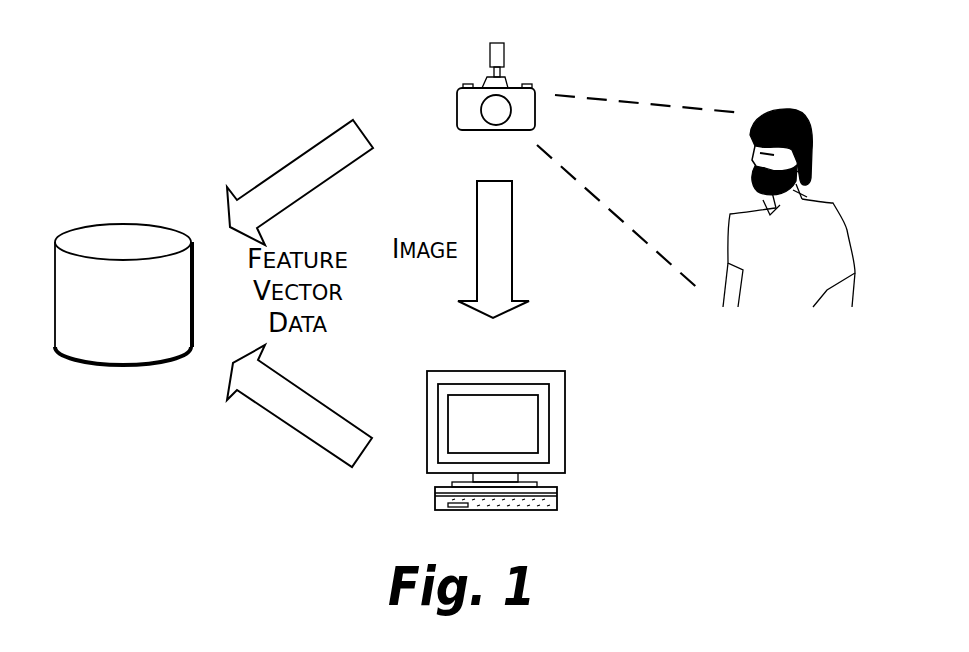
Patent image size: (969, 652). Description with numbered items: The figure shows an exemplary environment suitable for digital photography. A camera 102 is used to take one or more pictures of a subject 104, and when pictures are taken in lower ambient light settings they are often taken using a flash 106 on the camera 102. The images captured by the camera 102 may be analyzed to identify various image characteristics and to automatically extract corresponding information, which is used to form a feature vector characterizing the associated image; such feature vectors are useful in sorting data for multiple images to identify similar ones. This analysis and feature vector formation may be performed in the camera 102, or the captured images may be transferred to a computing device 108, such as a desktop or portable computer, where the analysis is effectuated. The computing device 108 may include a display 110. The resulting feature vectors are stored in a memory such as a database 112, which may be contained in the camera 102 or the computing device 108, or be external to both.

The camera 102 is at (458, 108).
The subject 104 is at (841, 179).
The flash 106 is at (505, 48).
The computing device 108 is at (433, 503).
The display 110 is at (450, 371).
The database 112 is at (95, 225).